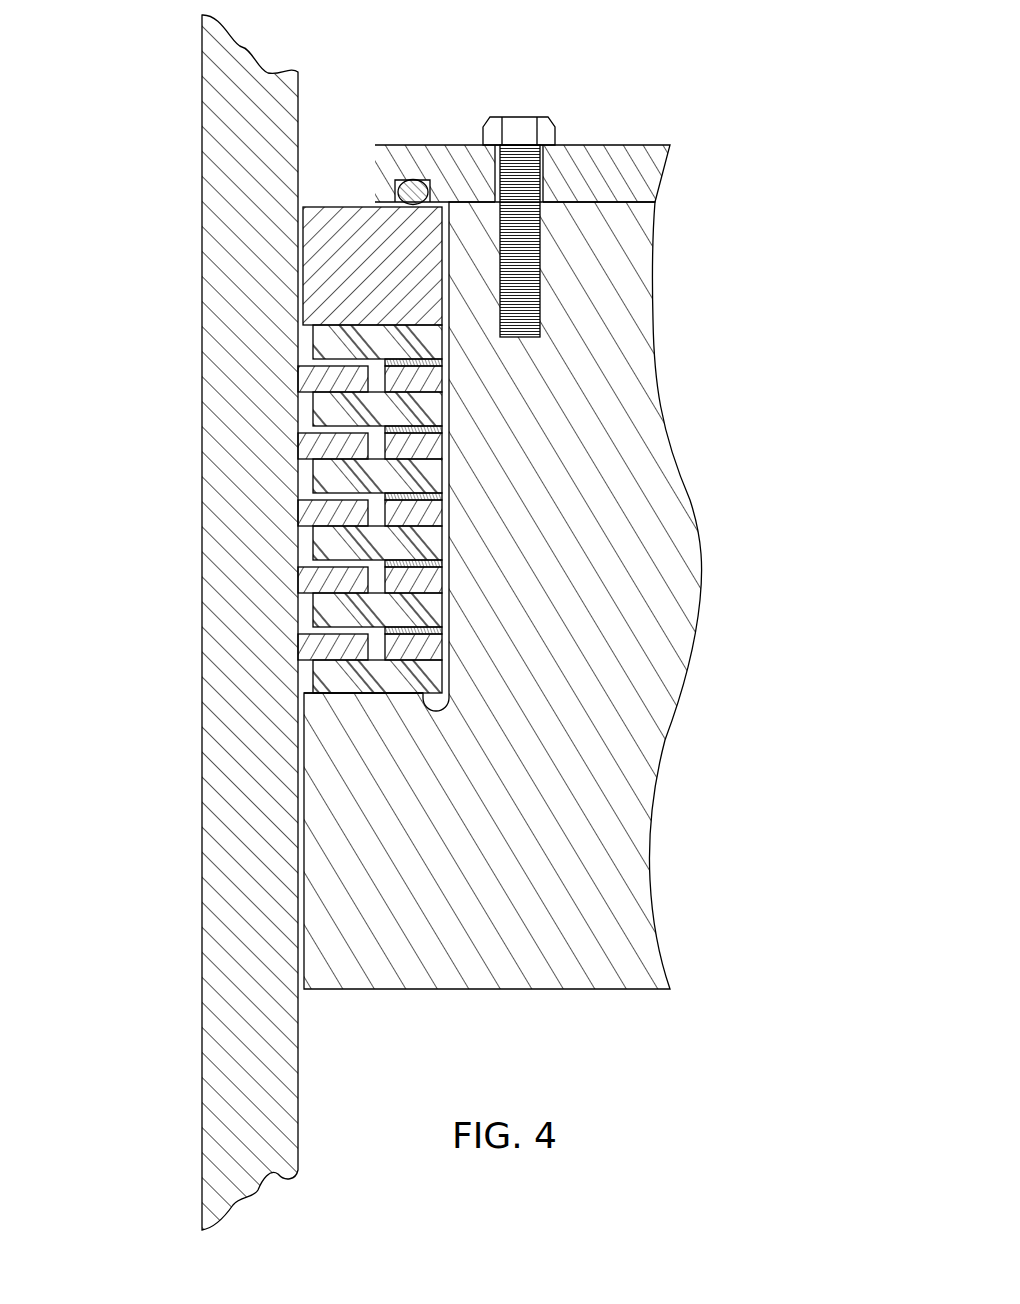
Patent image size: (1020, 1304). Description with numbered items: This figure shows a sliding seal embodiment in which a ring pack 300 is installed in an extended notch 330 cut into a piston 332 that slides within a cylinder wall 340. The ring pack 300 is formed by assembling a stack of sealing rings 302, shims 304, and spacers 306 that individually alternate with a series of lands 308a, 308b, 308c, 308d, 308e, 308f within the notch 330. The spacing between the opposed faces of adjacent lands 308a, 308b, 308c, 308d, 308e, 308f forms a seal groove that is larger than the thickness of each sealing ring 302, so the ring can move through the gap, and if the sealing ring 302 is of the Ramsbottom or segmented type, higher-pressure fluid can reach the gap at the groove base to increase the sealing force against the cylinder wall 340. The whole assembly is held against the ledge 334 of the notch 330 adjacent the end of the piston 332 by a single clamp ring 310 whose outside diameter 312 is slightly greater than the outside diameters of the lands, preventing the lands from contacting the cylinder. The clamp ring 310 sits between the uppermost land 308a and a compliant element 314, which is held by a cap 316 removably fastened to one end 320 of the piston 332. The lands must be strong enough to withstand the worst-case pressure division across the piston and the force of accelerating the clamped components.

The ring pack 300 is at (297, 468).
The sealing ring 302 is at (298, 378).
The shim 304 is at (443, 361).
The spacer 306 is at (443, 378).
The land 308a is at (313, 343).
The land 308b is at (313, 409).
The land 308c is at (313, 476).
The land 308d is at (313, 543).
The land 308e is at (313, 610).
The land 308f is at (313, 677).
The clamp ring 310 is at (310, 293).
The outside diameter 312 is at (287, 217).
The compliant element 314 is at (423, 188).
The cap 316 is at (620, 180).
The end of the piston 320 is at (456, 524).
The notch 330 is at (442, 297).
The piston 332 is at (641, 587).
The ledge 334 is at (352, 692).
The cylinder wall 340 is at (297, 123).